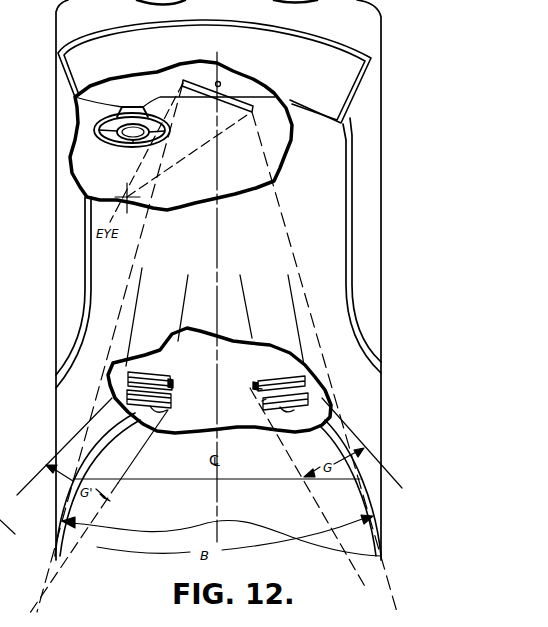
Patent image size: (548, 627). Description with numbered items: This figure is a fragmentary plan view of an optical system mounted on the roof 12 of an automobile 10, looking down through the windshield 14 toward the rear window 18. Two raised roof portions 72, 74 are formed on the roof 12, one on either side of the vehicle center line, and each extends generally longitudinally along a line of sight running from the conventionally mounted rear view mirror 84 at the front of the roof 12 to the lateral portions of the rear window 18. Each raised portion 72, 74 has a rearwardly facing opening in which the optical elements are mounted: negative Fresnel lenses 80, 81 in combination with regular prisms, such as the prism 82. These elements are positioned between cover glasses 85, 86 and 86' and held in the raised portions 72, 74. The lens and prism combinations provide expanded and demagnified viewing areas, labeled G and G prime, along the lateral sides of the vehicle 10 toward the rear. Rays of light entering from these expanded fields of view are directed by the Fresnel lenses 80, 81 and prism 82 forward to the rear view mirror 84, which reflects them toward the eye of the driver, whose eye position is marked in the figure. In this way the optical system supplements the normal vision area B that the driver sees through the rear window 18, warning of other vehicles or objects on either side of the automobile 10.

The automobile 10 is at (42, 48).
The windshield 14 is at (214, 71).
The roof portion 12 is at (327, 174).
The rear view mirror 84 is at (233, 93).
The raised roof portion 72 is at (170, 314).
The raised roof portion 74 is at (284, 314).
The rear window 18 is at (190, 462).
The regular prism 82 is at (172, 380).
The negative Fresnel lens 80 is at (173, 393).
The cover glass 85 is at (162, 412).
The cover glass 86' is at (248, 368).
The cover glass 86 is at (285, 409).
The negative Fresnel lens 81 is at (262, 401).